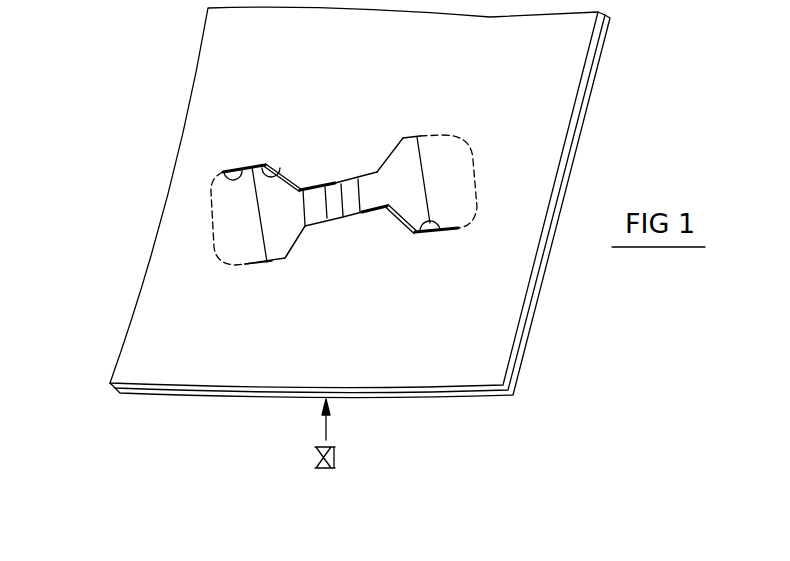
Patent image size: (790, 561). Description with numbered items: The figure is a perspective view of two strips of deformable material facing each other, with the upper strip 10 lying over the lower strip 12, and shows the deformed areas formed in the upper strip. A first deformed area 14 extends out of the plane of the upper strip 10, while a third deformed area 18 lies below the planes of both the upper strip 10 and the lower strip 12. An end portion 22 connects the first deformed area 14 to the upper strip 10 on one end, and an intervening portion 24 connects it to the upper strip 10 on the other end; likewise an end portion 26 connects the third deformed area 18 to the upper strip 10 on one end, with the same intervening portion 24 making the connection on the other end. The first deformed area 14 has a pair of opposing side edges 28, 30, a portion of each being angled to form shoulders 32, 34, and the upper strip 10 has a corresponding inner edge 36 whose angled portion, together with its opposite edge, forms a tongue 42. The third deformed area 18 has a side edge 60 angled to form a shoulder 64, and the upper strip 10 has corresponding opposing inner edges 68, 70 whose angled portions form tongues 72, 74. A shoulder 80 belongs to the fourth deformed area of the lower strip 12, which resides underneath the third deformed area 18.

The upper strip 10 is at (122, 332).
The lower strip 12 is at (143, 395).
The first deformed area 14 is at (415, 200).
The third deformed area 18 is at (267, 228).
The end portion 22 is at (433, 196).
The intervening portion 24 is at (341, 181).
The end portion 26 is at (223, 232).
The side edge 28 is at (408, 138).
The side edge 30 is at (445, 230).
The shoulder 32 is at (394, 150).
The shoulder 34 is at (412, 234).
The inner edge 36 is at (428, 235).
The tongue 42 is at (392, 220).
The side edge 60 is at (223, 171).
The shoulder 64 is at (264, 167).
The inner edge 68 is at (273, 263).
The inner edge 70 is at (253, 167).
The tongue 72 is at (297, 190).
The tongue 74 is at (295, 247).
The shoulder 80 is at (304, 188).